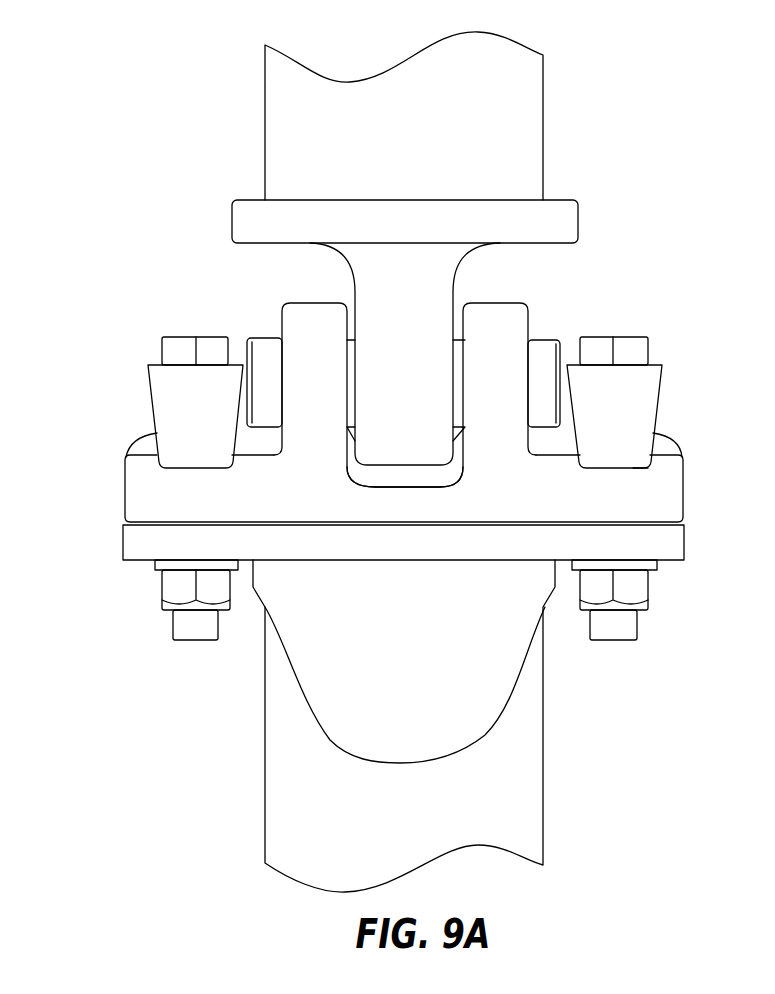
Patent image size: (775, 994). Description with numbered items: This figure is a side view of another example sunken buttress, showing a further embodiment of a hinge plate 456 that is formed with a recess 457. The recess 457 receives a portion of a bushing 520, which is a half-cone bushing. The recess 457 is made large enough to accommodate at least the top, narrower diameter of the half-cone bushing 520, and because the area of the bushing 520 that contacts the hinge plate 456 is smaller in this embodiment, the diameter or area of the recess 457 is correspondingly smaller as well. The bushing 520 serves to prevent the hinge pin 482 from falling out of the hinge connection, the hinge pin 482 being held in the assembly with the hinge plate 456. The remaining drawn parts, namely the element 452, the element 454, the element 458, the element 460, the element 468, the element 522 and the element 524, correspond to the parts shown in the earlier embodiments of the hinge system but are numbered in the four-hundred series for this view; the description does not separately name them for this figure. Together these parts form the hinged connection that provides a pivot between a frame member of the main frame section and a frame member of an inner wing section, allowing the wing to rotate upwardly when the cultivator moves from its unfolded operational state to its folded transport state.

The clamp body 452 is at (303, 473).
The flange plate 454 is at (560, 212).
The hinge plate 456 is at (546, 504).
The recess 457 is at (630, 463).
The clamp arms 458 is at (312, 347).
The base plate 460 is at (472, 556).
The web stem 468 is at (405, 328).
The hinge pin 482 is at (547, 347).
The bushing 520 is at (167, 393).
The bolt head 522 is at (638, 348).
The nut 524 is at (637, 587).